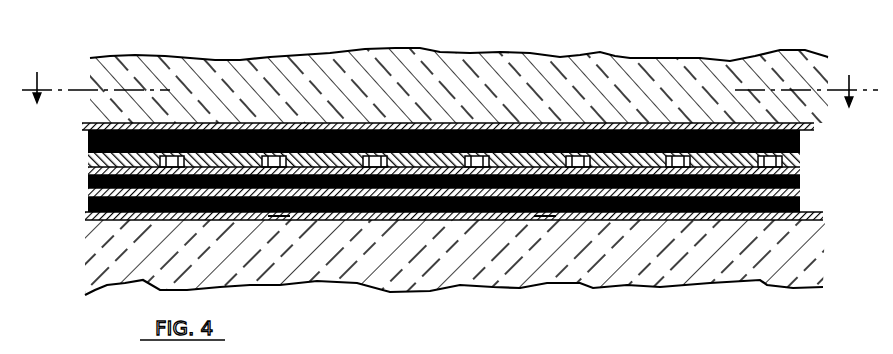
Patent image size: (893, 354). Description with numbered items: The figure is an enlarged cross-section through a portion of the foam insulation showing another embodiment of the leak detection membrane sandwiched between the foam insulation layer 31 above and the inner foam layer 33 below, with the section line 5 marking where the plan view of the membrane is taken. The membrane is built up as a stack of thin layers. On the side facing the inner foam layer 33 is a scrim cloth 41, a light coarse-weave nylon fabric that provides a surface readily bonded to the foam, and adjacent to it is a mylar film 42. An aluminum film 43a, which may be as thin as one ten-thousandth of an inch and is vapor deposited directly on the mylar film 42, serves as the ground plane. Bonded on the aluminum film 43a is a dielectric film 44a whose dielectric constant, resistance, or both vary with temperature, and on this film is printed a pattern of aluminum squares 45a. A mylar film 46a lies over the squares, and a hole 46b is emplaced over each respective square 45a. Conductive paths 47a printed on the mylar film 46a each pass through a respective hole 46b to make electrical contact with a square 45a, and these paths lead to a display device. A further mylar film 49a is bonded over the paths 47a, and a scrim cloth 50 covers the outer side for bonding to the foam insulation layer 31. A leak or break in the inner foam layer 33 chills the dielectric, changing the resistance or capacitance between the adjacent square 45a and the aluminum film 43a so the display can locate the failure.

The section line 5- 5 is at (46, 69).
The foam insulation layer 31 is at (696, 68).
The inner foam layer 33 is at (708, 263).
The scrim cloth 41 is at (86, 217).
The mylar film 42 is at (800, 205).
The aluminum film 43a is at (92, 189).
The dielectric film 44a is at (800, 180).
The squares 45a is at (278, 219).
The mylar film 46a is at (97, 160).
The hole 46b is at (456, 123).
The conductive paths 47a is at (790, 131).
The mylar film 49a is at (179, 123).
The scrim cloth 50 is at (107, 126).